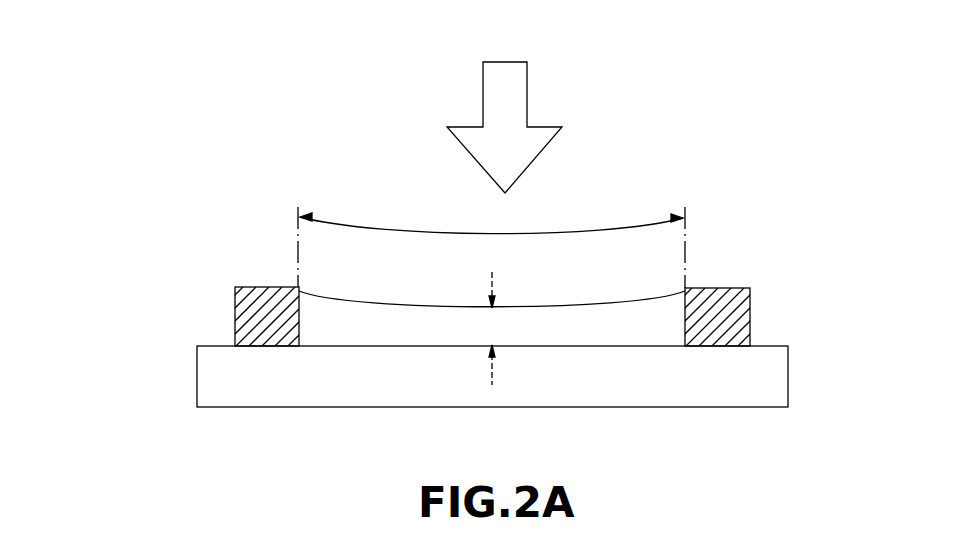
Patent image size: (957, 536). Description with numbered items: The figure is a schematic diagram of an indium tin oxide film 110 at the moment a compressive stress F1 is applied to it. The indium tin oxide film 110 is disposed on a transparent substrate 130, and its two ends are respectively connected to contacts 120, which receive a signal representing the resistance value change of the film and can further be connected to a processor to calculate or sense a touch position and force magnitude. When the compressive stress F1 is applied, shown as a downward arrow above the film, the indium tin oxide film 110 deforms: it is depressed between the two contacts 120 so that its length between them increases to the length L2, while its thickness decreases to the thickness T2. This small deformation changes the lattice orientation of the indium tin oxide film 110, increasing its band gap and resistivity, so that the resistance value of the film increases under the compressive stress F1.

The indium tin oxide film 110 is at (350, 313).
The contacts 120 is at (237, 310).
The transparent substrate 130 is at (223, 387).
The compressive stress F1 is at (527, 92).
The length L2 is at (491, 246).
The thickness T2 is at (490, 328).